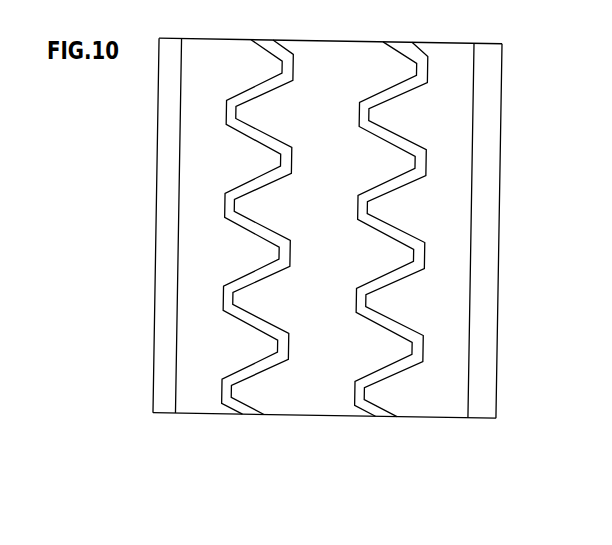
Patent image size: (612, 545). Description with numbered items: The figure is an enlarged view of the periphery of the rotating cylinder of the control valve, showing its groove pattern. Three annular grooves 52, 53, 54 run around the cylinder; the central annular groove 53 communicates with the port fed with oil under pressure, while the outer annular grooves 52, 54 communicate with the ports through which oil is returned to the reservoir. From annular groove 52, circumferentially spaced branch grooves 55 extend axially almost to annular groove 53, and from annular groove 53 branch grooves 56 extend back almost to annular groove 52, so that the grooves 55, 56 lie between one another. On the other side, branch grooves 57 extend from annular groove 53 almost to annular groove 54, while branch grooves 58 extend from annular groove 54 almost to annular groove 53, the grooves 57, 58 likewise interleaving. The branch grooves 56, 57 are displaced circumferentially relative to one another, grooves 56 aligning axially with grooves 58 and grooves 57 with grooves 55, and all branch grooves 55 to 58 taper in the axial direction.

The annular groove 52 is at (205, 98).
The annular groove 53 is at (328, 110).
The annular groove 54 is at (449, 110).
The branch grooves 55 is at (240, 158).
The branch grooves 56 is at (277, 295).
The branch grooves 57 is at (370, 340).
The branch grooves 58 is at (402, 198).